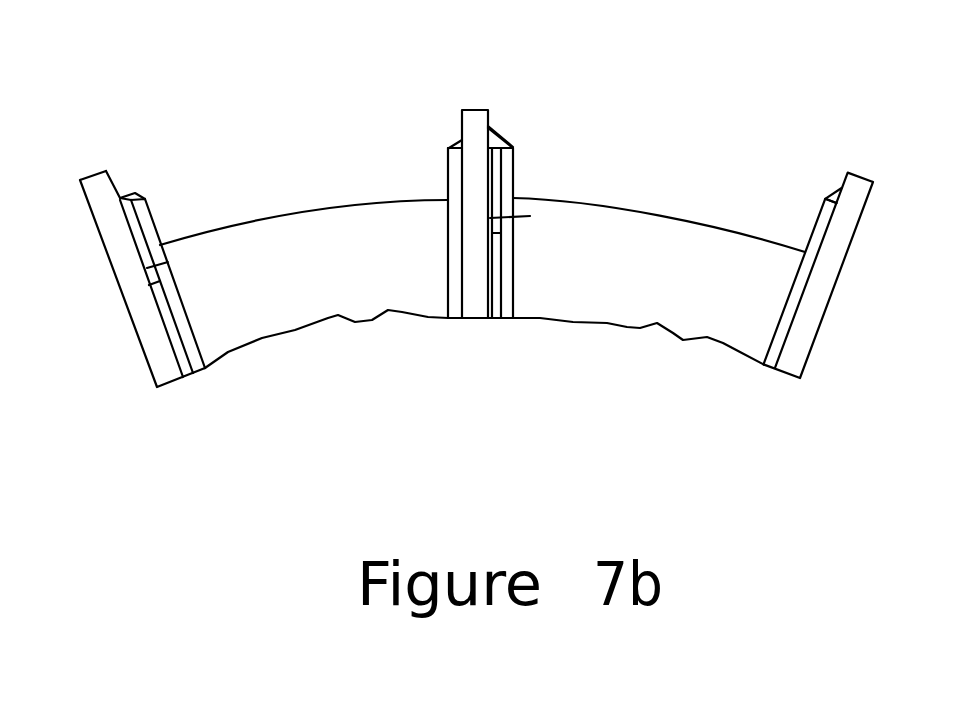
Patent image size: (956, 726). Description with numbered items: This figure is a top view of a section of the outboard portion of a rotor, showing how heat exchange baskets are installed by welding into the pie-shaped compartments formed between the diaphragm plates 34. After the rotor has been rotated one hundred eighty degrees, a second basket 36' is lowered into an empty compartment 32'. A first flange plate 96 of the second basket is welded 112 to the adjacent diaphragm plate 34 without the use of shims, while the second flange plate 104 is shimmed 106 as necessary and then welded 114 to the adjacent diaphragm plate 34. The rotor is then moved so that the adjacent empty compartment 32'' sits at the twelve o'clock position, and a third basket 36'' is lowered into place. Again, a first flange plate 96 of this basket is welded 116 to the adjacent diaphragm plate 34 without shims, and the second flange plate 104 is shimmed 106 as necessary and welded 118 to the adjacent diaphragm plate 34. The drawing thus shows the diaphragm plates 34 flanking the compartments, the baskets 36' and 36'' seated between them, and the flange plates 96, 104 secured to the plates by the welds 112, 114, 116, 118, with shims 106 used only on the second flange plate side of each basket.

The diaphragm plate 34 is at (94, 183).
The weld 118 is at (124, 194).
The second flange plate 104 is at (187, 345).
The shim 106 is at (165, 258).
The weld 116 is at (457, 141).
The weld 114 is at (500, 131).
The weld 112 is at (823, 201).
The first flange plate 96 is at (455, 256).
The empty compartment 32'' is at (304, 140).
The empty compartment 32' is at (659, 143).
The third basket 36'' is at (359, 364).
The second basket 36' is at (638, 362).